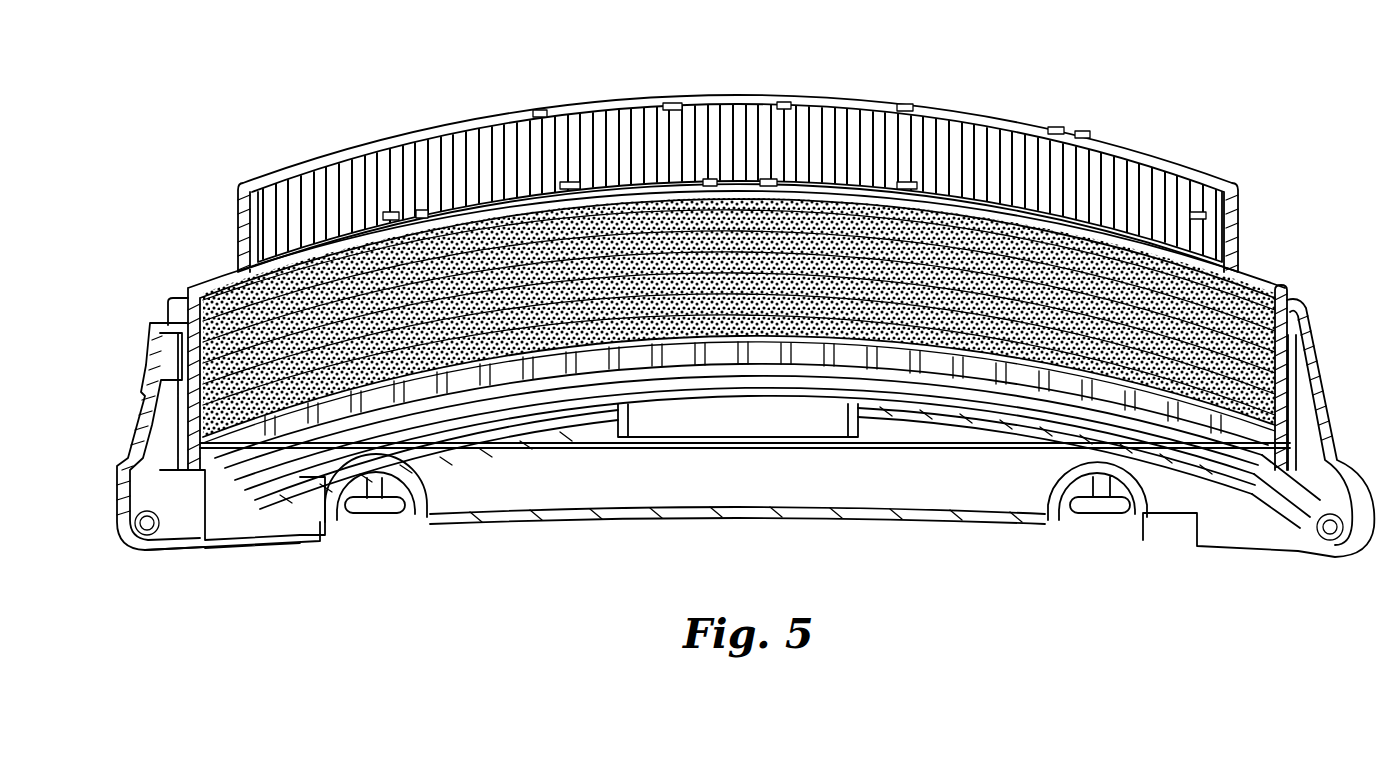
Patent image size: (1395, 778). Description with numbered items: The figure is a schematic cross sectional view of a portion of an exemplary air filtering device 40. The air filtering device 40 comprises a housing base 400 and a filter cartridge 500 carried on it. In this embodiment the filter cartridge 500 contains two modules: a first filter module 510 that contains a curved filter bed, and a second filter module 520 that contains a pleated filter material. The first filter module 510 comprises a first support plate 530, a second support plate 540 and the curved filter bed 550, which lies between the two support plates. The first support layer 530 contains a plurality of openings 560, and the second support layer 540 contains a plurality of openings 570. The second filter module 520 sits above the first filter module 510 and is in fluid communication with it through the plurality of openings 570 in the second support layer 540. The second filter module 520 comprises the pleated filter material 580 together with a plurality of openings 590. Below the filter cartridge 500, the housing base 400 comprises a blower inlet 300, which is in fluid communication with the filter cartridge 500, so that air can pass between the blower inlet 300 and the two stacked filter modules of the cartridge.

The air filtering device 40 is at (1230, 100).
The blower inlet 300 is at (722, 420).
The housing base 400 is at (847, 520).
The filter cartridge 500 is at (240, 212).
The first filter module 510 is at (180, 345).
The second filter module 520 is at (1238, 180).
The first support plate 530 is at (227, 433).
The second support plate 540 is at (1245, 270).
The curved filter bed 550 is at (210, 280).
The openings 560 is at (497, 360).
The openings 570 is at (422, 222).
The pleated filter material 580 is at (304, 183).
The openings 590 is at (814, 100).